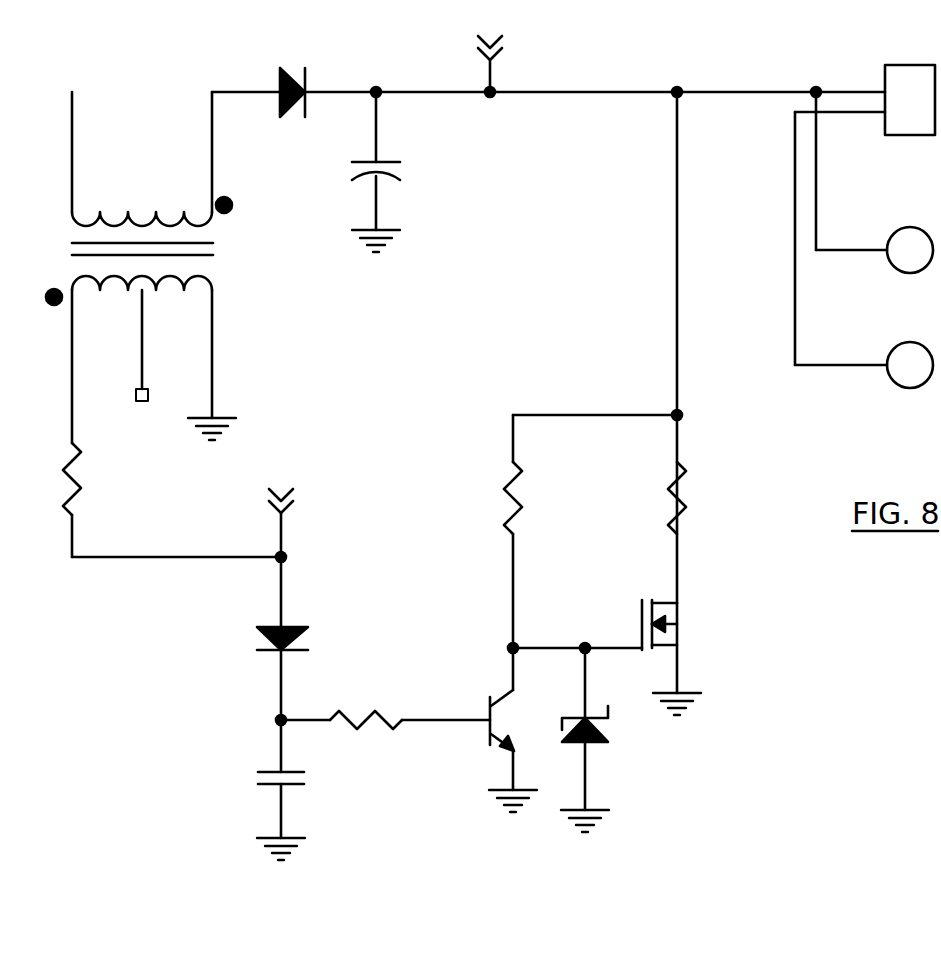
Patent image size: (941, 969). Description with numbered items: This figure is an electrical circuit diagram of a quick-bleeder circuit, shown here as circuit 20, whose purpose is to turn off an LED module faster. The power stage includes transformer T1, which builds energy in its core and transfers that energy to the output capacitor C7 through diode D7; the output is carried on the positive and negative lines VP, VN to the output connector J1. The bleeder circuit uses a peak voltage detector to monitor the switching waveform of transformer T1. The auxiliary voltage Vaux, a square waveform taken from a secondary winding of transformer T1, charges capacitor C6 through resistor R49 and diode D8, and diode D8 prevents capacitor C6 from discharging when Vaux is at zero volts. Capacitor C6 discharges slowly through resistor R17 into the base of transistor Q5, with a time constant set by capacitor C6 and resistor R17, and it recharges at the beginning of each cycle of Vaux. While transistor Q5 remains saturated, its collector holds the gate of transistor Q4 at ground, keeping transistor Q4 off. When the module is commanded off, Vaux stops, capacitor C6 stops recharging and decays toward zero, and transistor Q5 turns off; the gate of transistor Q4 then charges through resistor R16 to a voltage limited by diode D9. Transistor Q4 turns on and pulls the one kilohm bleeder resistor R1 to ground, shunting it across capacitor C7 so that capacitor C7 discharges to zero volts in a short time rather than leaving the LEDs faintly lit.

The transformer T1 is at (141, 235).
The diode D7 is at (270, 72).
The output capacitor C7 is at (397, 172).
The positive output voltage terminal VP is at (705, 142).
The negative output voltage terminal VN is at (864, 240).
The output connector J1 is at (910, 83).
The resistor R49 is at (143, 500).
The auxiliary voltage Vaux is at (279, 545).
The diode D8 is at (305, 677).
The capacitor C6 is at (305, 802).
The resistor R17 is at (385, 689).
The transistor Q5 is at (492, 720).
The resistor R16 is at (538, 498).
The bleeder resistor R1 is at (696, 497).
The transistor Q4 is at (685, 657).
The diode D9 is at (610, 740).
The output circuit 20 is at (130, 661).